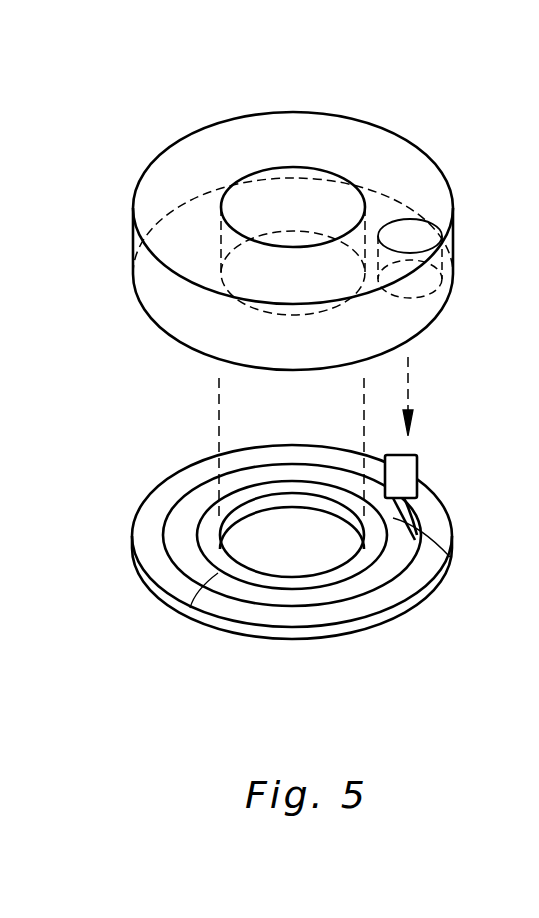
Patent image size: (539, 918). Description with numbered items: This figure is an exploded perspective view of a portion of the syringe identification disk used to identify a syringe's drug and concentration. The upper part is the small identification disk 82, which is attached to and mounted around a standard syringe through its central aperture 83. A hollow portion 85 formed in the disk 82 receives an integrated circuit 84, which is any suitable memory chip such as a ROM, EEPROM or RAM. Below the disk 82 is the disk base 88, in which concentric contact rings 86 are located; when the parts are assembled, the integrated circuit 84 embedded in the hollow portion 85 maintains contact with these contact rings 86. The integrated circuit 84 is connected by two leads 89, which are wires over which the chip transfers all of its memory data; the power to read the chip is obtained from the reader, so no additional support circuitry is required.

The identification disk 82 is at (395, 150).
The aperture 83 is at (285, 220).
The hollow portion 85 is at (412, 243).
The disk base 88 is at (188, 472).
The concentric contact rings 86 is at (190, 608).
The leads 89 is at (416, 502).
The integrated circuit 84 is at (418, 463).